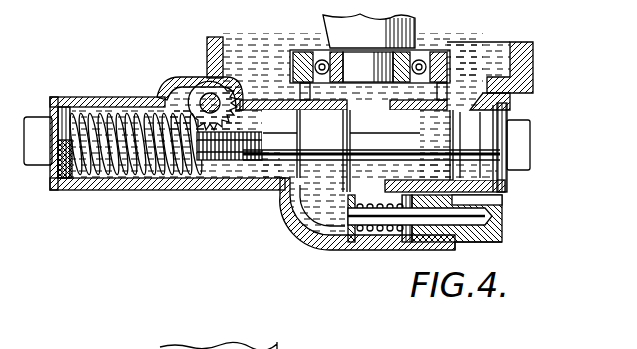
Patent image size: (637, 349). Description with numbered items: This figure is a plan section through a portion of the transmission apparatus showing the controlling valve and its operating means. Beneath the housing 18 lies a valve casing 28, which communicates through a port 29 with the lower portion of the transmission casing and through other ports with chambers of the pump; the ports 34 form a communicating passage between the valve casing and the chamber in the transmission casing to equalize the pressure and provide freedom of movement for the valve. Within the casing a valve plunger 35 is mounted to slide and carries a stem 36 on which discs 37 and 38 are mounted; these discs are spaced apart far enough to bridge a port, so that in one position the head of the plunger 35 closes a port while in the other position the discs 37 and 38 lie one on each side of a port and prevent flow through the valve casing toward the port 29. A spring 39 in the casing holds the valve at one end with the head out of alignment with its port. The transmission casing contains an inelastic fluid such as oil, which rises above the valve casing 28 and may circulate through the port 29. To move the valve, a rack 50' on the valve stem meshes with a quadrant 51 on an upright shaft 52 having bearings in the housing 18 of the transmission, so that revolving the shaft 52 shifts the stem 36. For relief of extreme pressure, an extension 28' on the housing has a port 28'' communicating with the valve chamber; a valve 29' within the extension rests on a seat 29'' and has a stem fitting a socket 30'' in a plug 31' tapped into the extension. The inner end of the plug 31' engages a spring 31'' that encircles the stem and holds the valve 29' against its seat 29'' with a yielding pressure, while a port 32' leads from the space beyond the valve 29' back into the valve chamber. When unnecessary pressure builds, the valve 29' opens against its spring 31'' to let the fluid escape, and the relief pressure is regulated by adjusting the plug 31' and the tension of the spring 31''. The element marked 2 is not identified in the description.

The housing 2 is at (533, 63).
The housing 18 is at (533, 80).
The valve casing 28 is at (154, 162).
The extension 28' is at (276, 243).
The port 28'' is at (274, 239).
The port 29 is at (371, 98).
The valve 29' is at (277, 257).
The seat 29'' is at (279, 269).
The socket 30'' is at (458, 270).
The plug 31' is at (527, 258).
The spring 31'' is at (362, 255).
The port 32' is at (333, 246).
The ports 34 is at (245, 92).
The valve plunger 35 is at (507, 186).
The stem 36 is at (500, 202).
The disc 37 is at (335, 197).
The disc 38 is at (300, 195).
The spring 39 is at (150, 125).
The rack 50' is at (161, 98).
The quadrant 51 is at (228, 128).
The upright shaft 52 is at (185, 85).